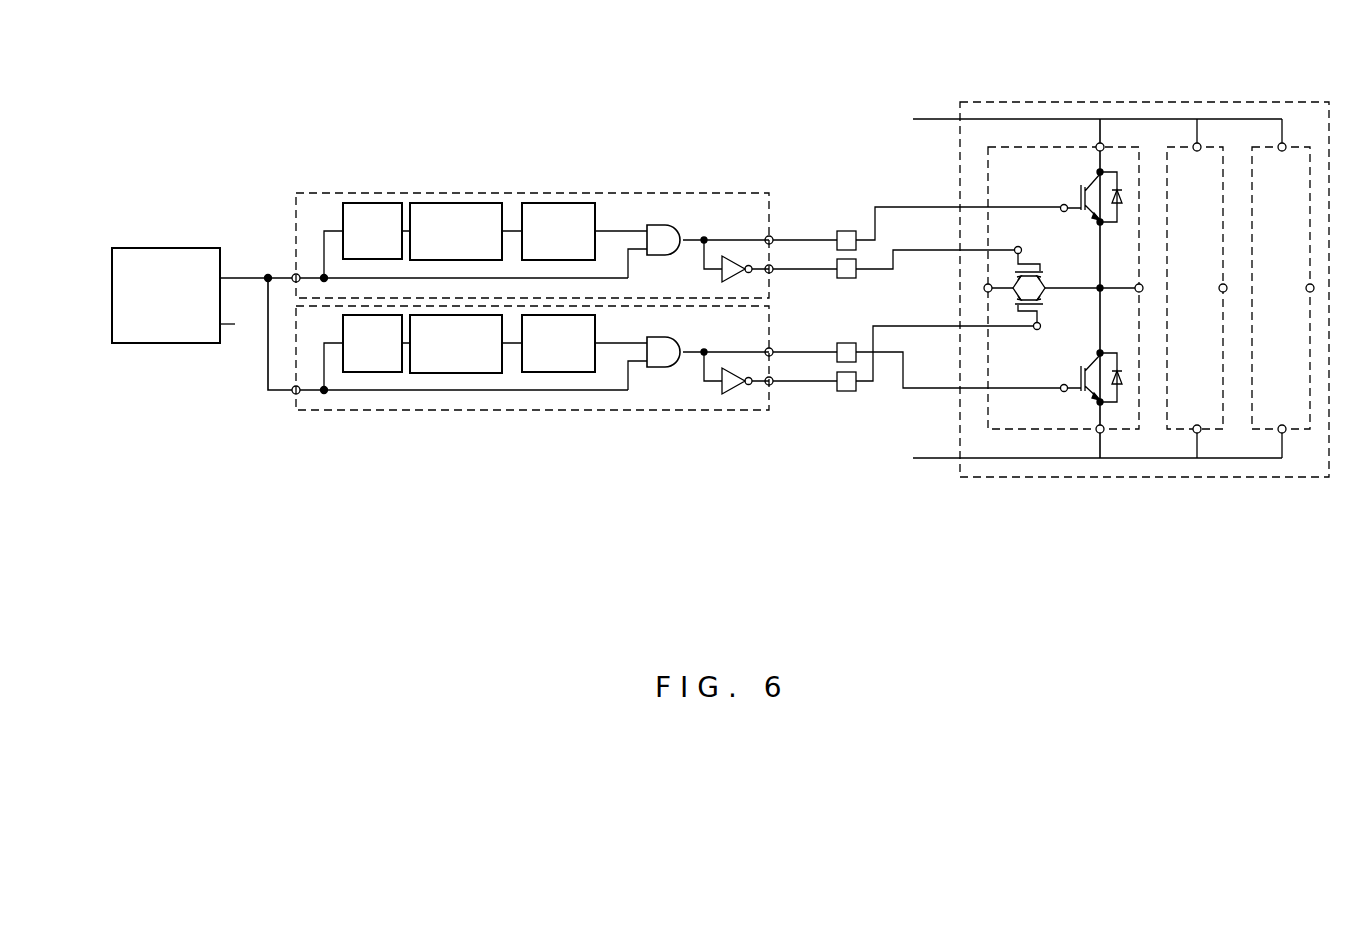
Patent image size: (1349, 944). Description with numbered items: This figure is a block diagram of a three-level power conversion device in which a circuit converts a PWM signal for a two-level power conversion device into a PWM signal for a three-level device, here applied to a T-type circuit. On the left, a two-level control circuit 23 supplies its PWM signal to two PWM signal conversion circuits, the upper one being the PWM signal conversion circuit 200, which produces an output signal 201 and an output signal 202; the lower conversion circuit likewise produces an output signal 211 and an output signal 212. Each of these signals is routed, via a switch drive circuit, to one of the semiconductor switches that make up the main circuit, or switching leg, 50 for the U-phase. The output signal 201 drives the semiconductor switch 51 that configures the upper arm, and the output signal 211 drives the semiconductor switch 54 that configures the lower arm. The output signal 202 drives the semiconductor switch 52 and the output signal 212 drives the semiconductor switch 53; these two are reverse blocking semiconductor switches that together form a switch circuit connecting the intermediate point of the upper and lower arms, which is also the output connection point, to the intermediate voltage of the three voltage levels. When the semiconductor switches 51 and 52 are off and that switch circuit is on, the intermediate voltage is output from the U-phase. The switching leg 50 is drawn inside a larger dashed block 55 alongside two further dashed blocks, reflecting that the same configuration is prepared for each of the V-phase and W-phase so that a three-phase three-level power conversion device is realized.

The two-level control circuit 23 is at (175, 246).
The PWM signal conversion circuit 200 is at (562, 193).
The output signal 212 is at (522, 411).
The output signal 201 is at (774, 240).
The output signal 202 is at (774, 271).
The output signal 211 is at (774, 352).
The main circuit (switching leg) 50 is at (1005, 146).
The power converter 55 is at (1062, 101).
The semiconductor switch 51 is at (1072, 195).
The semiconductor switch 52 is at (1026, 259).
The semiconductor switch 53 is at (1035, 331).
The semiconductor switch 54 is at (1077, 394).